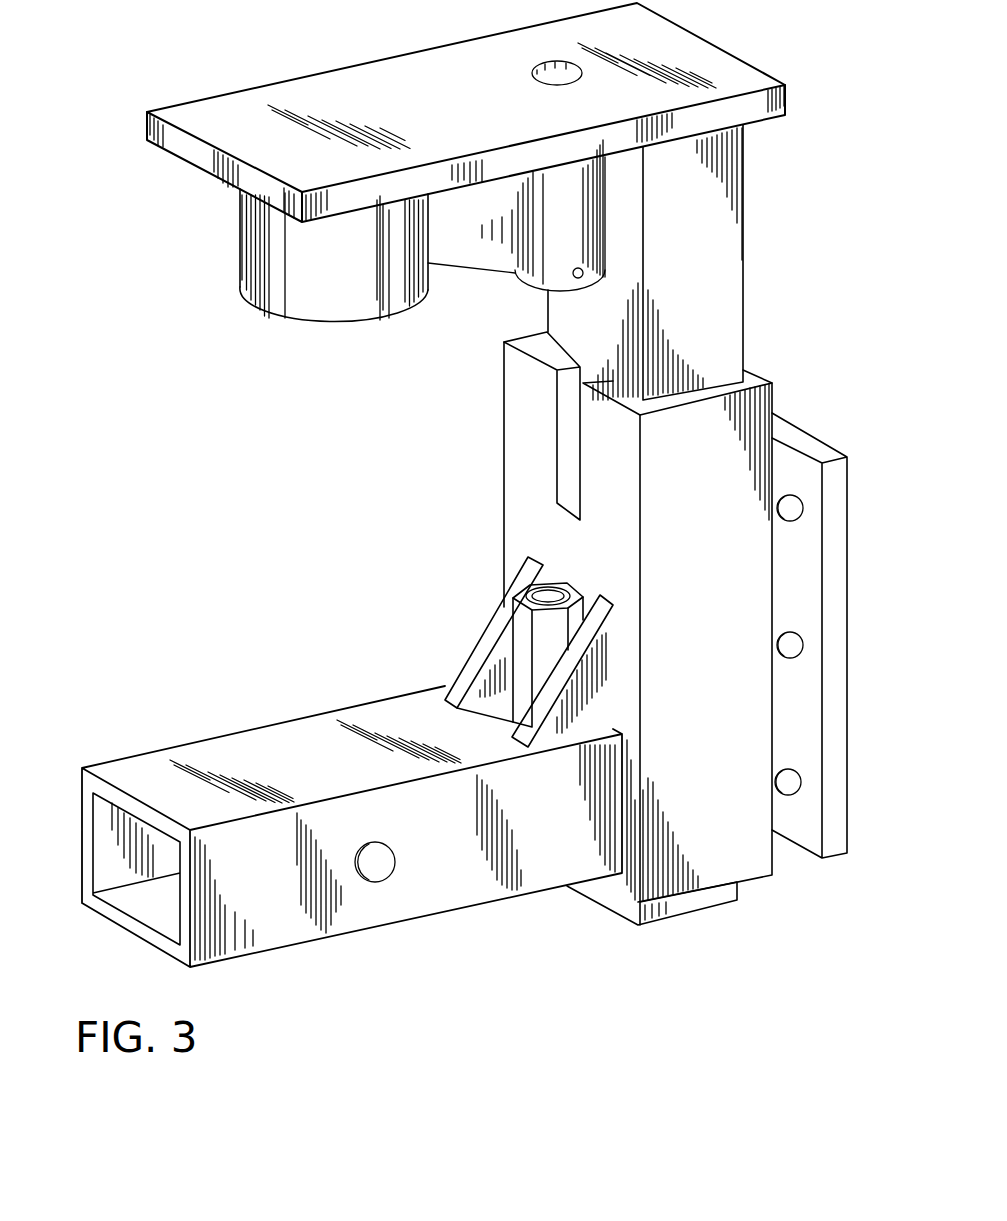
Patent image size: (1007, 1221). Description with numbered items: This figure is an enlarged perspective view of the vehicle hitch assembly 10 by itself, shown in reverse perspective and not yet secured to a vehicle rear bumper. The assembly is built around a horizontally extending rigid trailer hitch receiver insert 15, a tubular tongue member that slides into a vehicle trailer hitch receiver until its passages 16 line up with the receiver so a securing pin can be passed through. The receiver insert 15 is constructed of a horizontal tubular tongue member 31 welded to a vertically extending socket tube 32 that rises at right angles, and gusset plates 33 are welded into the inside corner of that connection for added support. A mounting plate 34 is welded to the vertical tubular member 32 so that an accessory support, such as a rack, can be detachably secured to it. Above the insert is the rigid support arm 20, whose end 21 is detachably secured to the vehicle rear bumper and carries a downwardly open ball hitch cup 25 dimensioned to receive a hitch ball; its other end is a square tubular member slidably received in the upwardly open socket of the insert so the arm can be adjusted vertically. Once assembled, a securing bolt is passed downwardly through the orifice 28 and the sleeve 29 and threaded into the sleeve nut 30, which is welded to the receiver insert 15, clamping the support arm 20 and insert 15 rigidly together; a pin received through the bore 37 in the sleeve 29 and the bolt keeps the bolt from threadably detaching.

The vehicle hitch assembly 10 is at (288, 495).
The trailer hitch receiver insert 15 is at (352, 852).
The passages 16 is at (357, 872).
The support arm 20 is at (712, 213).
The end of support arm 21 is at (266, 294).
The ball hitch cup 25 is at (307, 323).
The orifice 28 is at (533, 72).
The sleeve 29 is at (553, 222).
The sleeve nut 30 is at (520, 627).
The tubular tongue member 31 is at (262, 766).
The socket tube 32 is at (516, 481).
The gusset plates 33 is at (463, 674).
The mounting plate 34 is at (795, 463).
The bore 37 is at (584, 273).